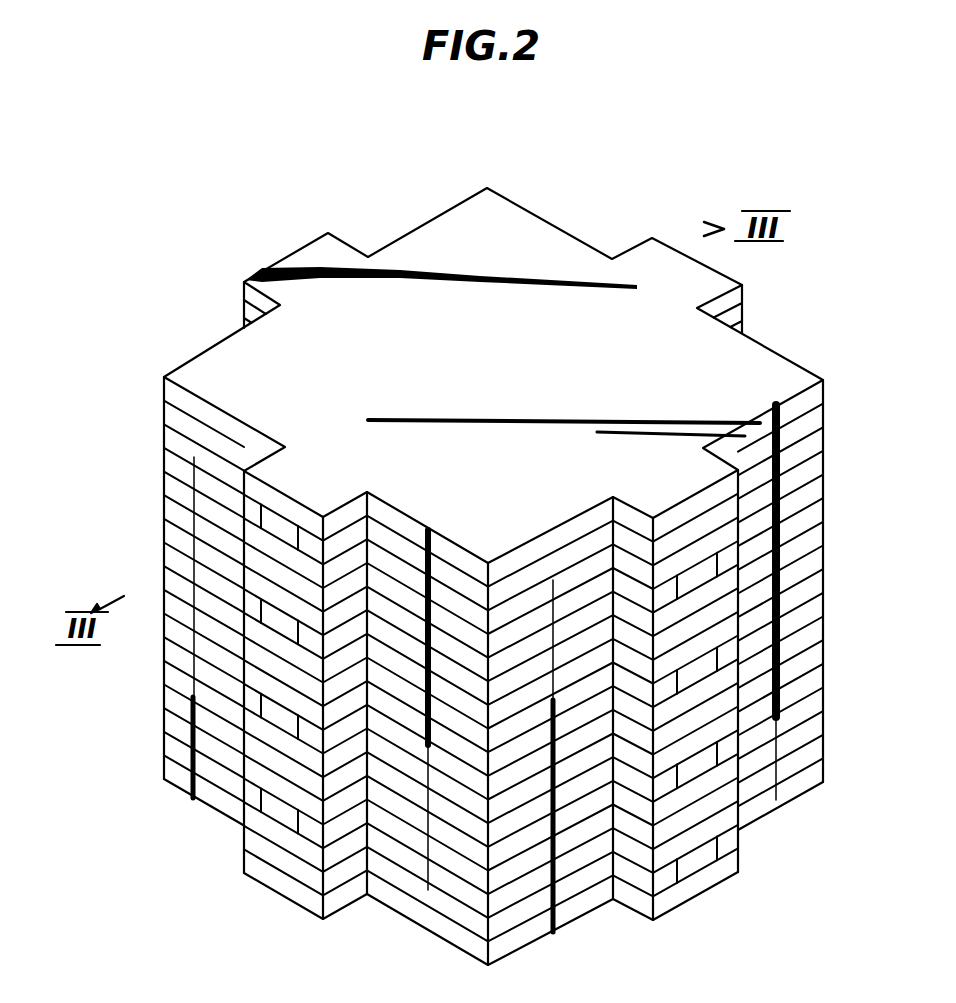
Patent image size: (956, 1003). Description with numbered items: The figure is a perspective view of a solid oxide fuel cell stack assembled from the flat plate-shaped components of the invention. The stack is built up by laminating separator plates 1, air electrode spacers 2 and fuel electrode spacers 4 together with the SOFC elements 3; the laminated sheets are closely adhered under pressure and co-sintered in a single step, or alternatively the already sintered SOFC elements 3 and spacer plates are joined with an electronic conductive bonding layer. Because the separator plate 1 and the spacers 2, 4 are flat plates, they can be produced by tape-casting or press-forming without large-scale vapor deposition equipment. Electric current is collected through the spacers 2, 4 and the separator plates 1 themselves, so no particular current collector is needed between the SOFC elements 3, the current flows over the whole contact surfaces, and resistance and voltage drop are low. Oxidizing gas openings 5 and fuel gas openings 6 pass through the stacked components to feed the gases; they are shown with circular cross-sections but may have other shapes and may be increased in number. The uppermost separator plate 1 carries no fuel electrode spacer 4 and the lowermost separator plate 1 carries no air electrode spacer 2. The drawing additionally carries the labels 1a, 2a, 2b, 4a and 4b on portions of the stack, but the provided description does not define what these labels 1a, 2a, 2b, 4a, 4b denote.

The separator plate 1 is at (521, 220).
The tooth projection of first layer 1a is at (300, 256).
The air electrode spacer 2 is at (163, 389).
The portion of second layer 2a is at (690, 533).
The portion of second layer 2b is at (306, 540).
The SOFC element 3 is at (163, 412).
The fuel electrode spacer 4 is at (163, 436).
The portion of fourth layer 4a is at (349, 573).
The portion of fourth layer 4b is at (727, 560).
The oxidizing gas opening 5 is at (272, 513).
The fuel gas opening 6 is at (656, 518).